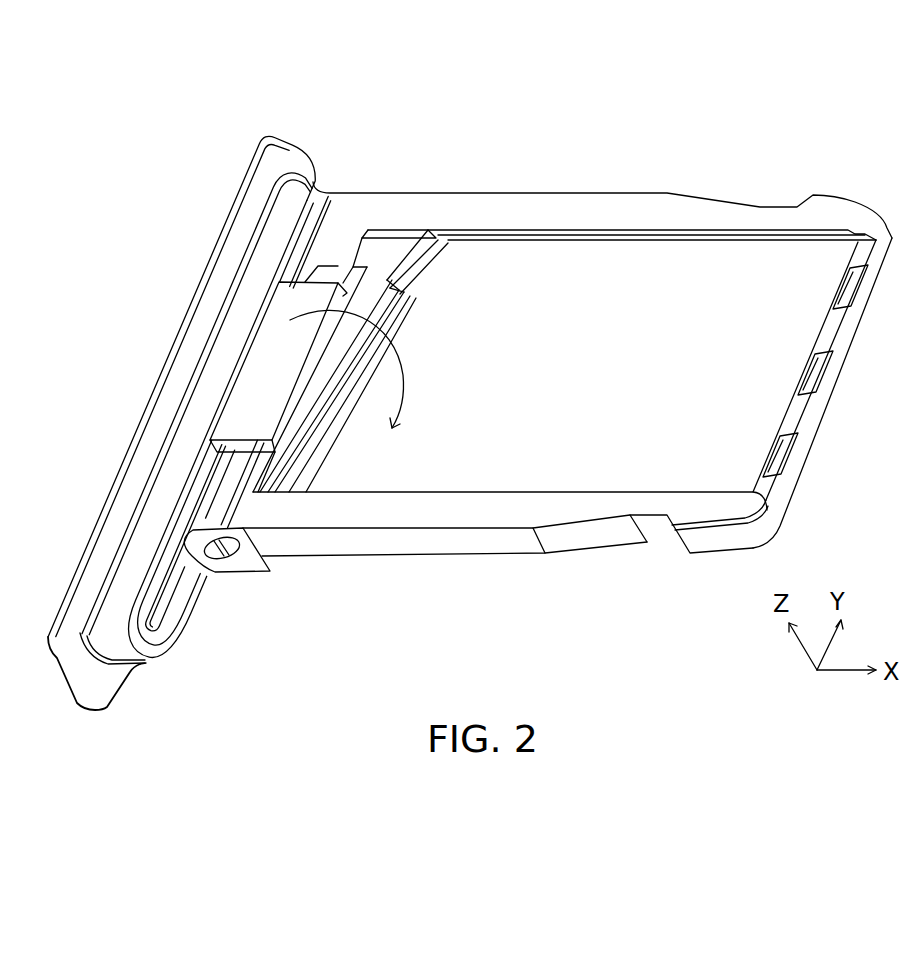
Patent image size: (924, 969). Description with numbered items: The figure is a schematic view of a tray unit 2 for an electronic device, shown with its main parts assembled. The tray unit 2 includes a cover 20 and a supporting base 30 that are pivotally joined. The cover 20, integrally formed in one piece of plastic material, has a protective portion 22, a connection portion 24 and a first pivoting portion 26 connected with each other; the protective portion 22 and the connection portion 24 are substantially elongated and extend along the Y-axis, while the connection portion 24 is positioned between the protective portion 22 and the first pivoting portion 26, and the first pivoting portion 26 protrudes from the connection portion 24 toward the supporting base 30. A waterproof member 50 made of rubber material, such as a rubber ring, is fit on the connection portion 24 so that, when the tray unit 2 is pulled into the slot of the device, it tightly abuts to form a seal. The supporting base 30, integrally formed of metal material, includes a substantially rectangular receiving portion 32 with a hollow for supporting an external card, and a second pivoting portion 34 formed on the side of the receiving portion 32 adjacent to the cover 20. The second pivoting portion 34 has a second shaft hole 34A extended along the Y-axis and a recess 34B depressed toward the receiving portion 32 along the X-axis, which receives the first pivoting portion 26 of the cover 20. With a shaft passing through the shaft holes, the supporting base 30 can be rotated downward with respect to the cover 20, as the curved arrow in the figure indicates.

The tray unit 2 is at (92, 87).
The cover 20 is at (311, 123).
The protective portion 22 is at (123, 463).
The connection portion 24 is at (157, 622).
The first pivoting portion 26 is at (270, 363).
The supporting base 30 is at (890, 186).
The receiving portion 32 is at (722, 217).
The second pivoting portion 34 is at (330, 277).
The second shaft hole 34A is at (223, 547).
The recess 34B is at (317, 277).
The waterproof member 50 is at (151, 667).